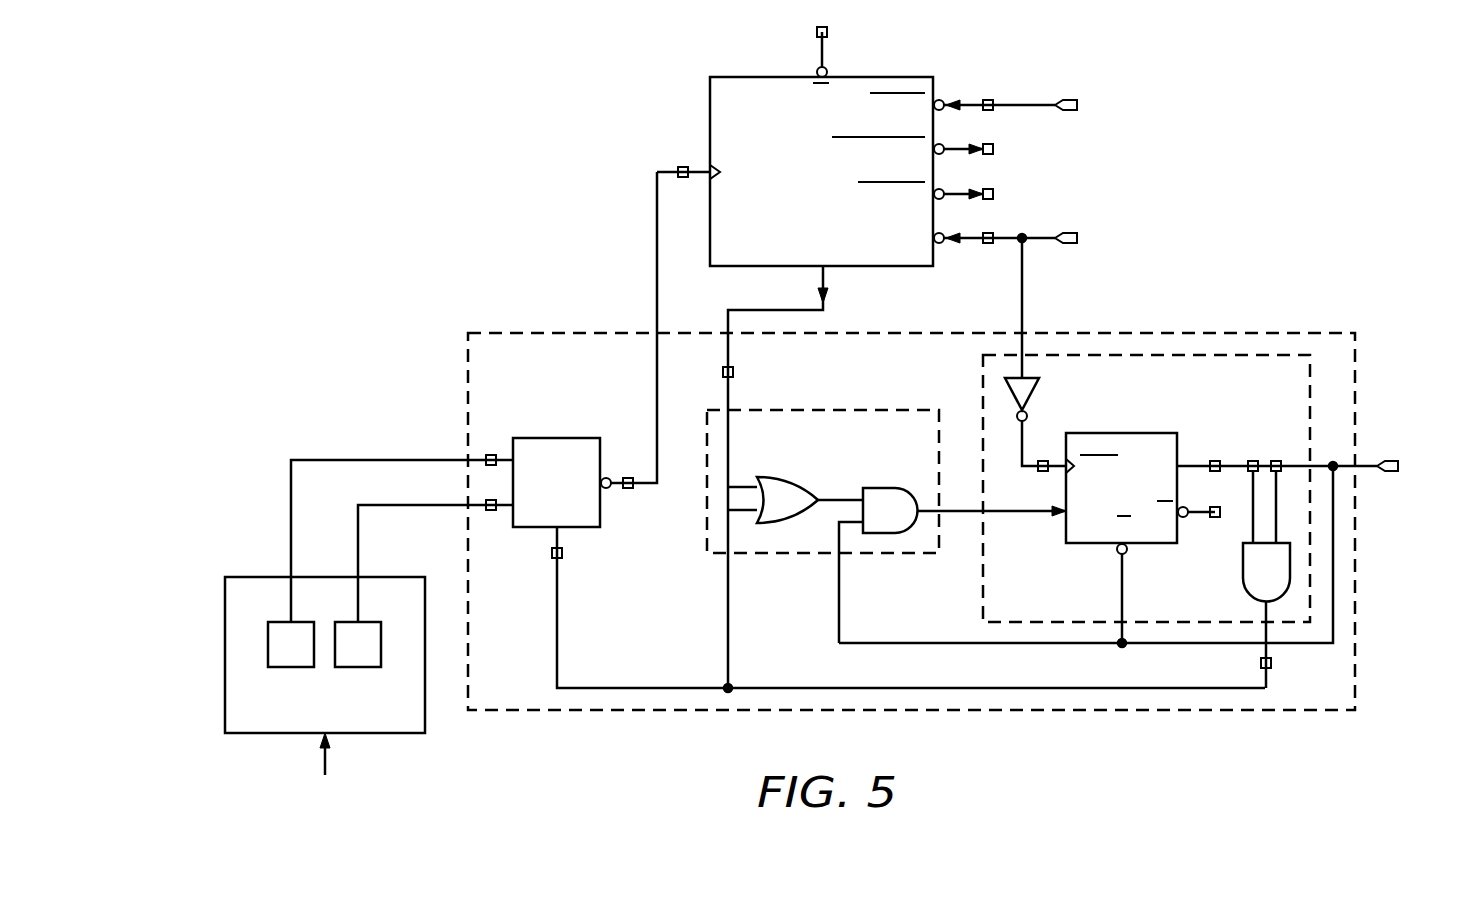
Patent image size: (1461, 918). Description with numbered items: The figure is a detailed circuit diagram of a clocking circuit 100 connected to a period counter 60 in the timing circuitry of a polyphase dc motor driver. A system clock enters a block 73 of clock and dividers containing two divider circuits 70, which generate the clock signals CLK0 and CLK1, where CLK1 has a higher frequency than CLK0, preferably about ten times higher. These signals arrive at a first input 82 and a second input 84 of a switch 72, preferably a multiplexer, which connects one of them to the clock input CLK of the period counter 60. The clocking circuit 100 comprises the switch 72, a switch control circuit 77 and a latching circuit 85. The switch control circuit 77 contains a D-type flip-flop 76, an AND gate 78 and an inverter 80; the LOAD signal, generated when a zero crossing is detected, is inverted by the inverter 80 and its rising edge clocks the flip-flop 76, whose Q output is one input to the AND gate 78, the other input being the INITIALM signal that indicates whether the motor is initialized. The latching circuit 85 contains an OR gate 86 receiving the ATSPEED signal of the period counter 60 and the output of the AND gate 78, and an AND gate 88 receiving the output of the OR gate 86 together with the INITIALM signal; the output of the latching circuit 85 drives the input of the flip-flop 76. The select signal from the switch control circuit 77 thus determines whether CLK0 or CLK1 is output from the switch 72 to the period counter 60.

The period counter 60 is at (765, 76).
The divider circuit 70 is at (290, 668).
The switch 72 is at (558, 437).
The system clock divider block 73 is at (225, 655).
The D-type flip-flop 76 is at (1122, 432).
The switch control circuit 77 is at (1258, 412).
The AND gate 78 is at (1243, 566).
The inverter 80 is at (1035, 396).
The first input 82 is at (443, 458).
The second input 84 is at (440, 508).
The latching circuit 85 is at (810, 410).
The OR gate 86 is at (795, 478).
The AND gate 88 is at (888, 487).
The clocking circuit 100 is at (1222, 333).